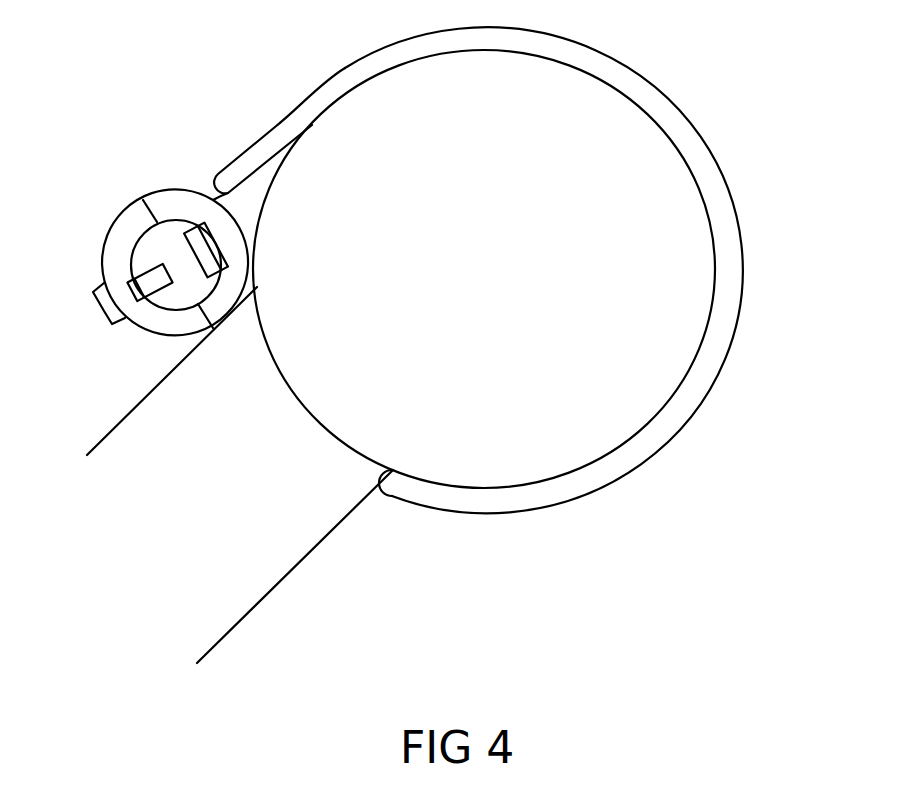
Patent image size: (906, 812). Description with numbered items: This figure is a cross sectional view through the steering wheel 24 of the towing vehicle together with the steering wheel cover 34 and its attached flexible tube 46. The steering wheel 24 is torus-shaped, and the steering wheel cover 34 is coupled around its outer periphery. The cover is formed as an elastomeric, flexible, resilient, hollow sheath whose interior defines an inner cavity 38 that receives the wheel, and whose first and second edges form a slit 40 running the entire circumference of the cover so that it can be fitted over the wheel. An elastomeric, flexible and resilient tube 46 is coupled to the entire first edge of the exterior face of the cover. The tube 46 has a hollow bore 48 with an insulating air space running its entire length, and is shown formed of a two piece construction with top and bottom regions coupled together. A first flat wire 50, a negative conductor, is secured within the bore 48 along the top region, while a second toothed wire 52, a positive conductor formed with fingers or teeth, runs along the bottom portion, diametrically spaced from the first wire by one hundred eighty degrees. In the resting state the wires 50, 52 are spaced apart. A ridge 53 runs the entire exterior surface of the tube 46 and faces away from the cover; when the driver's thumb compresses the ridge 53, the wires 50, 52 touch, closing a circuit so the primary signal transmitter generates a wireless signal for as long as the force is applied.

The steering wheel 24 is at (560, 297).
The steering wheel cover 34 is at (725, 180).
The inner cavity 38 is at (282, 157).
The slit 40 is at (385, 485).
The tube 46 is at (142, 200).
The hollow bore 48 is at (185, 280).
The first flat wire 50 is at (222, 250).
The second toothed wire 52 is at (134, 255).
The ridge 53 is at (105, 311).